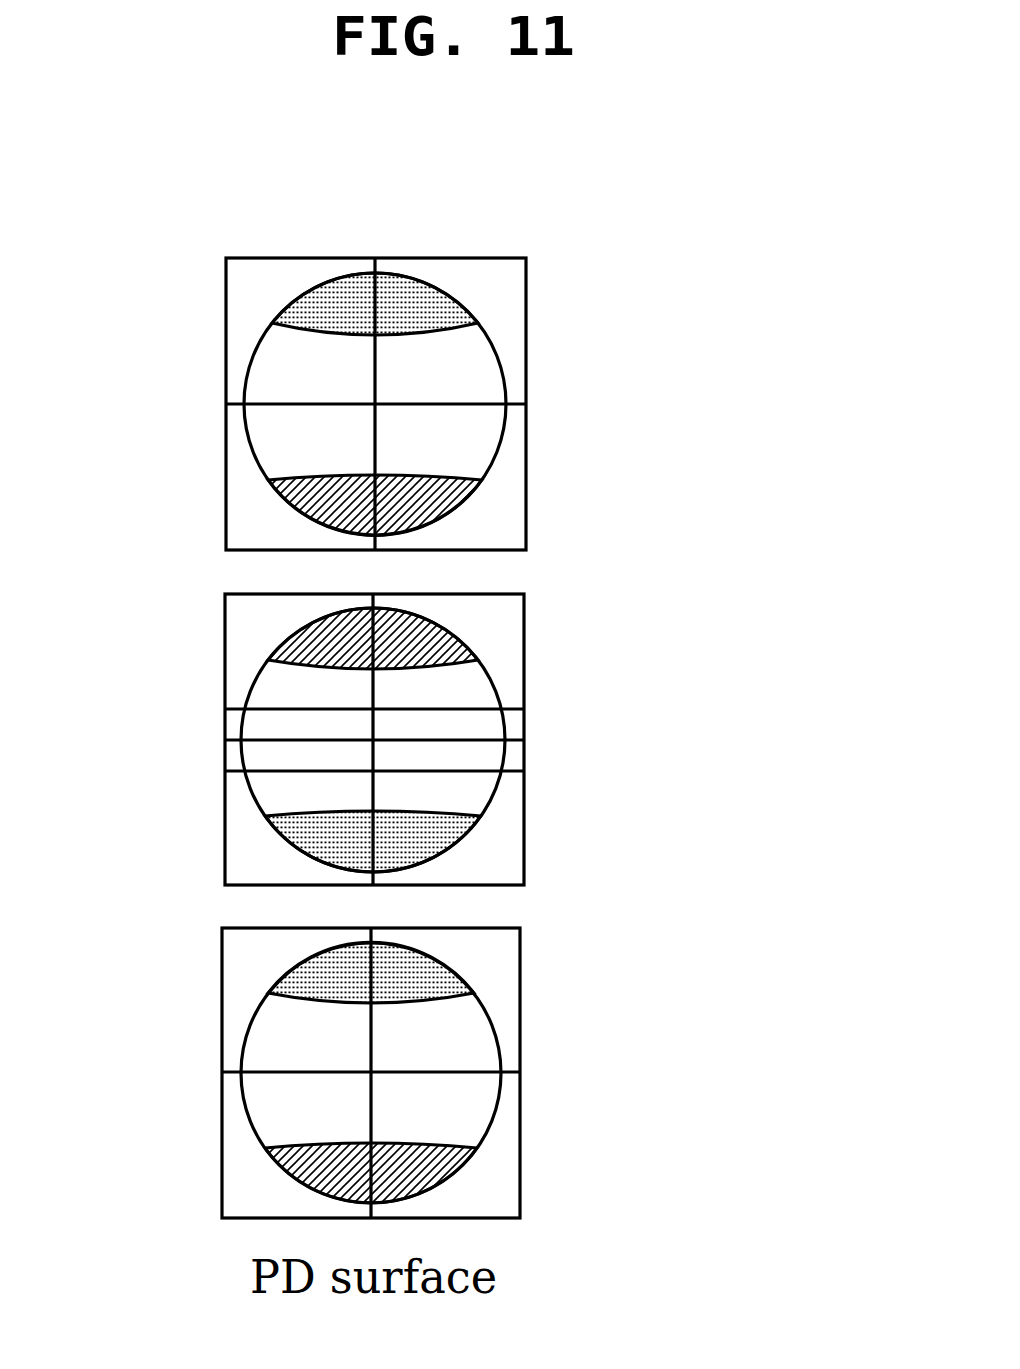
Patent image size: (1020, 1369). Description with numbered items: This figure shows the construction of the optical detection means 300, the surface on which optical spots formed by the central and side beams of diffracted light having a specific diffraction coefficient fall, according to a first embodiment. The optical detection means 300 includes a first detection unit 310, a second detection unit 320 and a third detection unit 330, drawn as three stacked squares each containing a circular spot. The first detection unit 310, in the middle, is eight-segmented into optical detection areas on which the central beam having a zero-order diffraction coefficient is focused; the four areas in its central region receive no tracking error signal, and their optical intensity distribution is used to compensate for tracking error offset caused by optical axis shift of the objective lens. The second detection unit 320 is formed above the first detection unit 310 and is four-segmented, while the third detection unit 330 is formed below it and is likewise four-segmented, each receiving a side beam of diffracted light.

The optical detection means 300 is at (573, 237).
The first detection unit 310 is at (525, 600).
The second detection unit 320 is at (526, 403).
The third detection unit 330 is at (522, 1071).